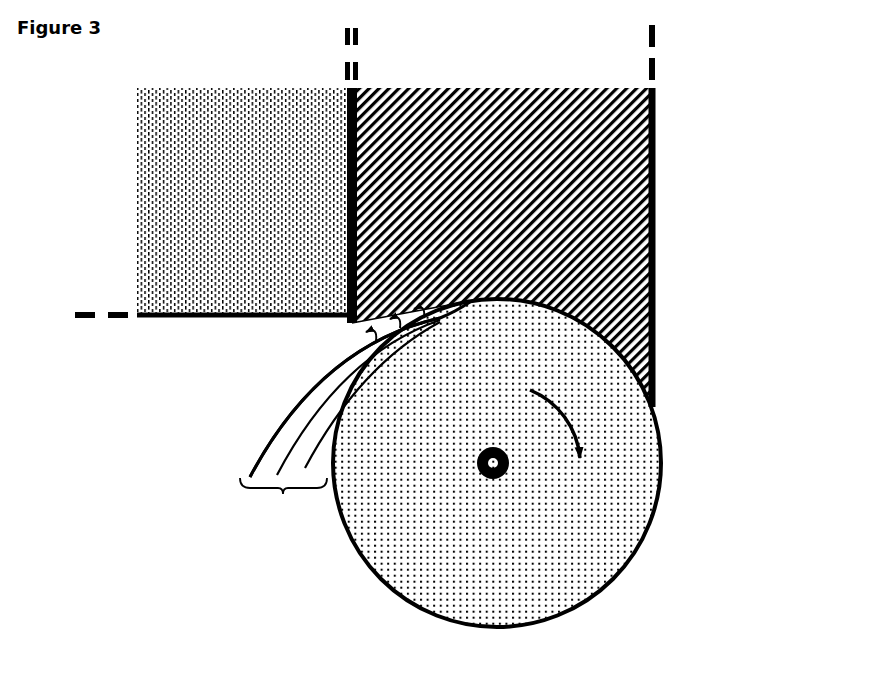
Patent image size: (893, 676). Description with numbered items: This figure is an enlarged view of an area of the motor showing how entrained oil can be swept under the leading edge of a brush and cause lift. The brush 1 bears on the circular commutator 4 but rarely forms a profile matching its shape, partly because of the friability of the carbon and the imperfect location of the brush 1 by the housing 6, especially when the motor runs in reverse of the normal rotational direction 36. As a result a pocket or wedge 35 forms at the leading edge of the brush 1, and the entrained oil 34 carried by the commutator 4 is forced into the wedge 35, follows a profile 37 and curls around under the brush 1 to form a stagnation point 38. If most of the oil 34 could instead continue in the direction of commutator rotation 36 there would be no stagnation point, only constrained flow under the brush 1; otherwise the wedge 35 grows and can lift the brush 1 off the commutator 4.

The brush 1 is at (660, 217).
The commutator 4 is at (590, 498).
The housing 6 is at (192, 263).
The entrained oil 34 is at (355, 409).
The wedge 35 is at (363, 342).
The direction of commutator rotation 36 is at (588, 433).
The oil flow profile 37 is at (297, 400).
The stagnation point 38 is at (440, 310).